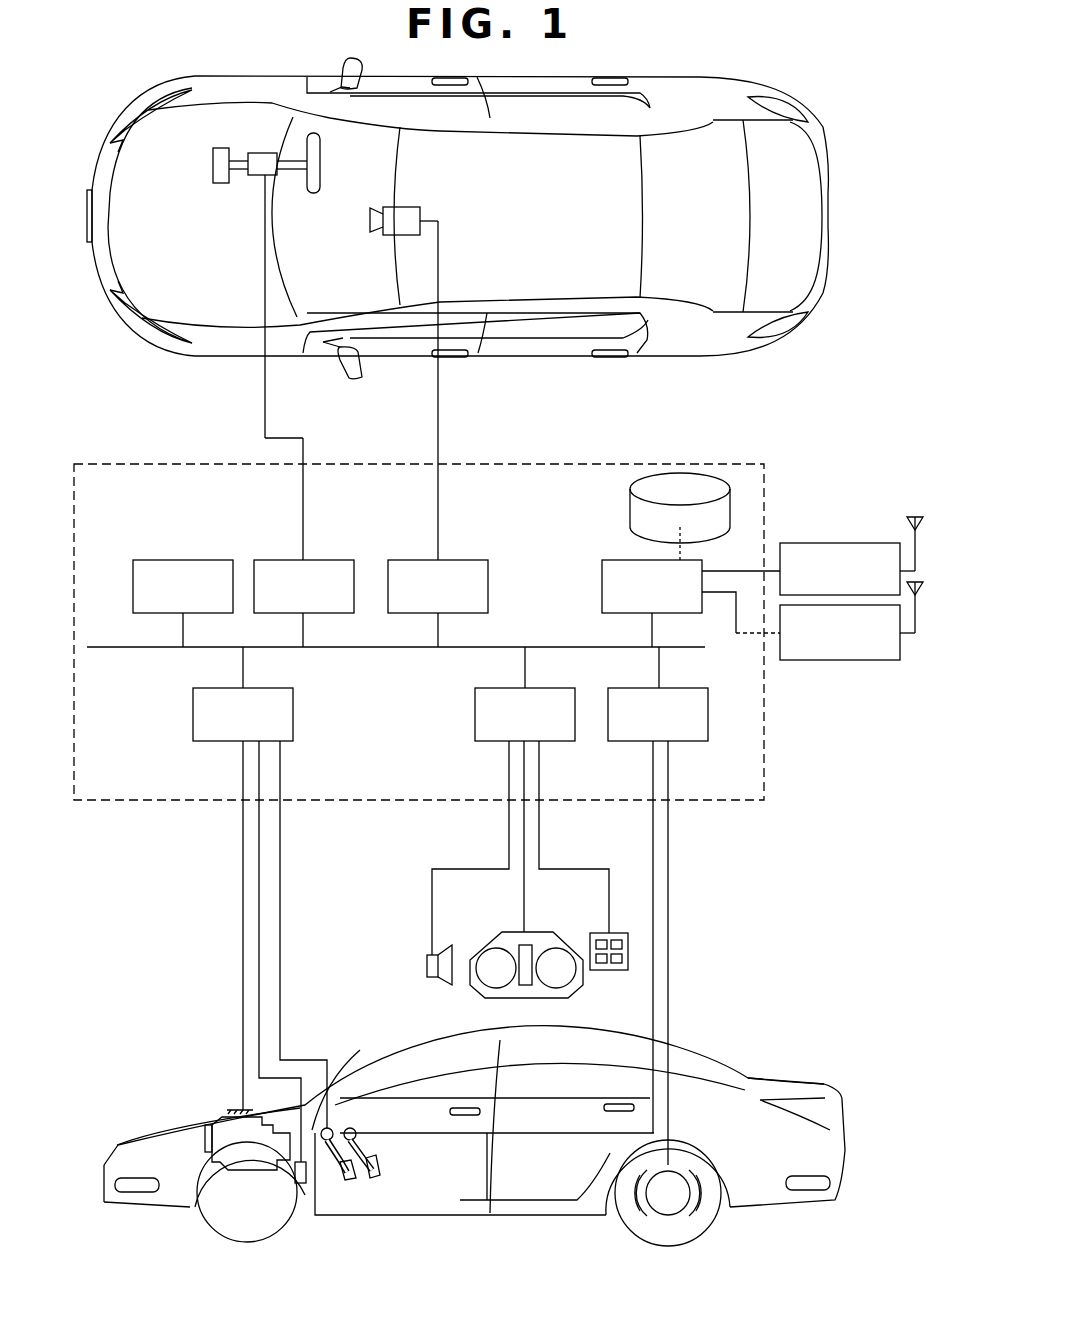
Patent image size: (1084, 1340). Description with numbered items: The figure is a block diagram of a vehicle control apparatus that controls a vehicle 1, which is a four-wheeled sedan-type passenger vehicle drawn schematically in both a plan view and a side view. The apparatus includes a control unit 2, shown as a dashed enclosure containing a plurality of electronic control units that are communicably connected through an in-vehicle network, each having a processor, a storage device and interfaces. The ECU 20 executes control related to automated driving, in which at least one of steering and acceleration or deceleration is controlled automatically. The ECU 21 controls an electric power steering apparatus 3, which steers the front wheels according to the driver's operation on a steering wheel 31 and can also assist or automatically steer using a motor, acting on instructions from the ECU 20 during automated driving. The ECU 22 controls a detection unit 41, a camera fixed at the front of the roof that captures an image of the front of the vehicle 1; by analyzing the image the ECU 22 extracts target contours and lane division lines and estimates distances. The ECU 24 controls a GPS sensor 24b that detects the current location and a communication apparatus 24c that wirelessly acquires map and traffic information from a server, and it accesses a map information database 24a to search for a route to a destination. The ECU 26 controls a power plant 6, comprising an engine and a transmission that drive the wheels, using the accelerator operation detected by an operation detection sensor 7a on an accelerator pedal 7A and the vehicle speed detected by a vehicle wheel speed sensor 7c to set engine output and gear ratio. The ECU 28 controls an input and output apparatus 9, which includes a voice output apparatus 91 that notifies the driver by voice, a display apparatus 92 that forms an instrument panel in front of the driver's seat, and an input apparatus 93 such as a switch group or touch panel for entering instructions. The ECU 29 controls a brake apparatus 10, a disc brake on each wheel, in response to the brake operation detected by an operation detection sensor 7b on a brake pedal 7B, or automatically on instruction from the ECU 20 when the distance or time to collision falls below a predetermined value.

The vehicle 1 is at (838, 132).
The control unit 2 is at (760, 808).
The electric power steering apparatus 3 is at (220, 185).
The steering wheel 31 is at (314, 194).
The detection unit (camera) 41 is at (405, 236).
The ECU 20 is at (215, 558).
The ECU 21 is at (335, 558).
The ECU 22 is at (420, 558).
The ECU 24 is at (605, 558).
The map information database 24a is at (680, 470).
The GPS sensor 24b is at (834, 541).
The communication apparatus 24c is at (830, 662).
The ECU 26 is at (228, 744).
The ECU 28 is at (557, 744).
The ECU 29 is at (695, 744).
The power plant 6 is at (218, 1115).
The operation detection sensor 7a is at (332, 1122).
The accelerator pedal 7A is at (355, 1178).
The operation detection sensor 7b is at (356, 1134).
The brake pedal 7B is at (380, 1165).
The vehicle wheel speed sensor 7c is at (300, 1184).
The input and output apparatus 9 is at (452, 1003).
The voice output apparatus 91 is at (427, 962).
The display apparatus 92 is at (484, 943).
The input apparatus 93 is at (610, 971).
The brake apparatus 10 is at (668, 1246).